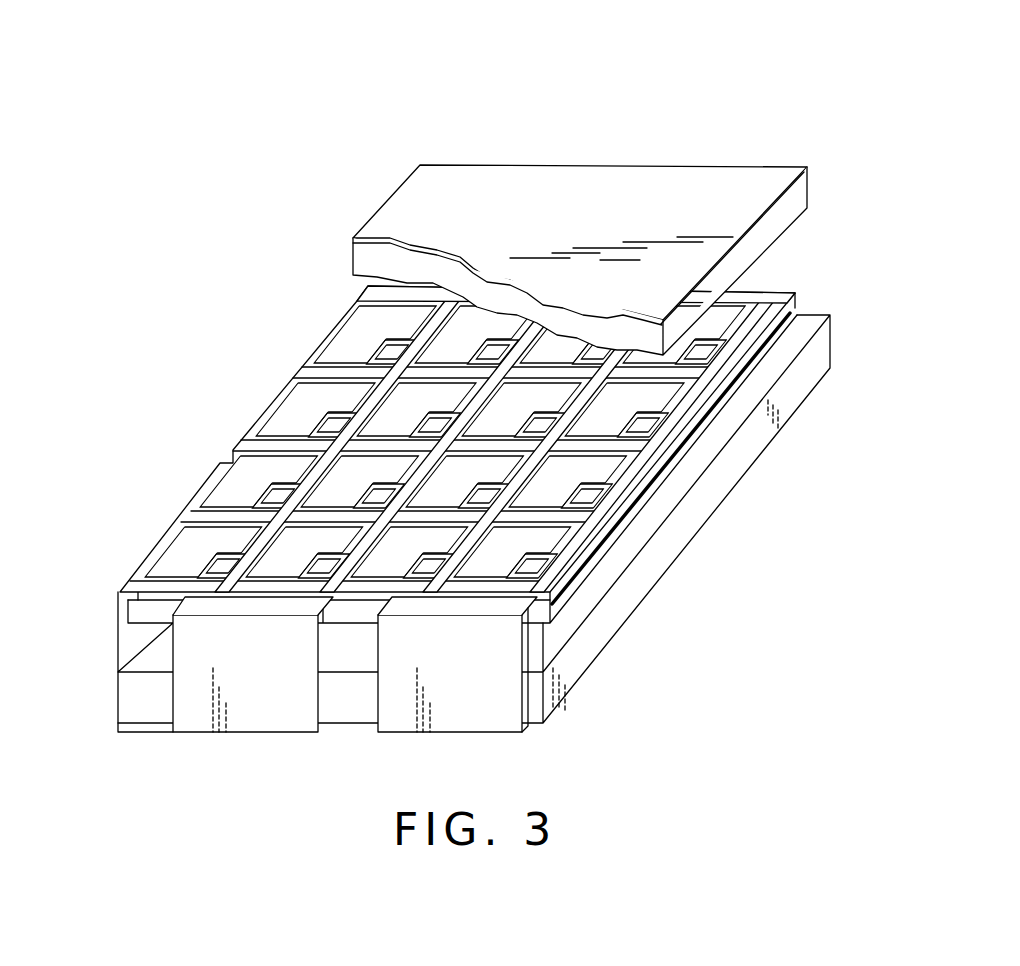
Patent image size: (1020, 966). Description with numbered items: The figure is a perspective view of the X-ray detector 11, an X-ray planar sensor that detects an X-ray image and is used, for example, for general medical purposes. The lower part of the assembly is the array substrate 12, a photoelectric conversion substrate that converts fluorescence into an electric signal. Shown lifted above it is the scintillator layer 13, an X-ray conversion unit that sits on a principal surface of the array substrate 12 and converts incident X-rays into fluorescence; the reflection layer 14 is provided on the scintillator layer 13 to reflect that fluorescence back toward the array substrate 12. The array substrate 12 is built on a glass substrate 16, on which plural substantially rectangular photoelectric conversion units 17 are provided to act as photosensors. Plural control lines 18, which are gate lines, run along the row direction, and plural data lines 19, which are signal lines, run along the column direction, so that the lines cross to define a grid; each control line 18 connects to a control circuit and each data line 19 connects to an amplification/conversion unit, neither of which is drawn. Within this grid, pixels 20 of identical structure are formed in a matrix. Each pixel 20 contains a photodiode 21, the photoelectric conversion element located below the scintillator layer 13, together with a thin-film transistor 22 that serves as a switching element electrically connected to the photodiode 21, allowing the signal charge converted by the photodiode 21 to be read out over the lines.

The X-ray detector 11 is at (337, 107).
The array substrate 12 is at (108, 589).
The scintillator layer 13 is at (367, 265).
The reflection layer 14 is at (353, 237).
The glass substrate 16 is at (620, 618).
The photoelectric conversion units 17 is at (547, 538).
The control lines 18 is at (237, 513).
The data lines 19 is at (367, 543).
The pixels 20 is at (320, 397).
The photodiode 21 is at (317, 398).
The thin-film transistor 22 is at (333, 420).